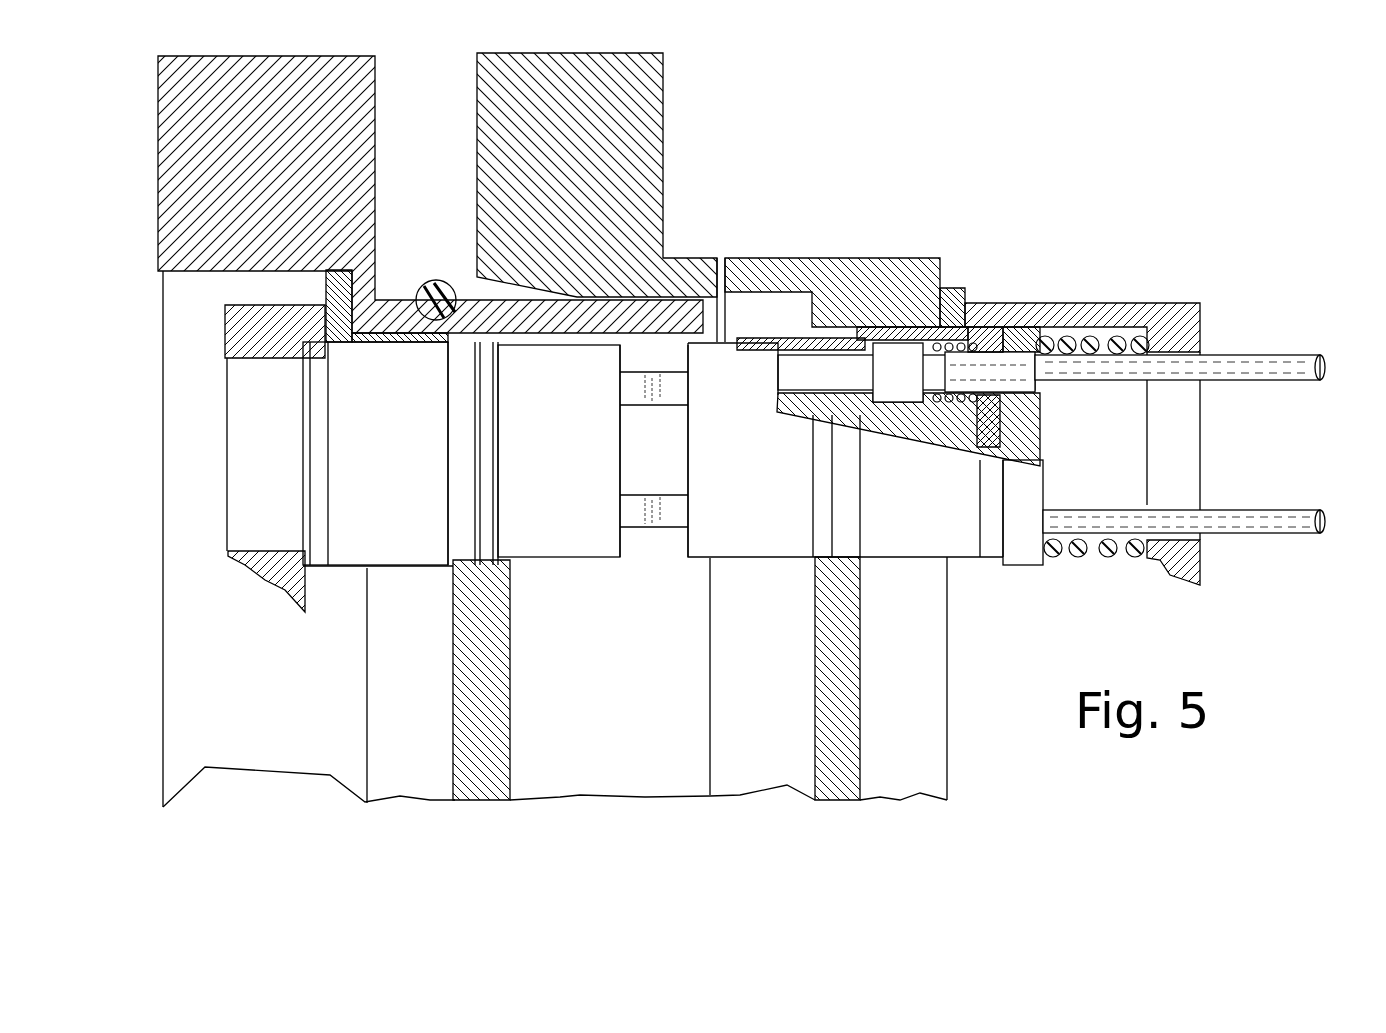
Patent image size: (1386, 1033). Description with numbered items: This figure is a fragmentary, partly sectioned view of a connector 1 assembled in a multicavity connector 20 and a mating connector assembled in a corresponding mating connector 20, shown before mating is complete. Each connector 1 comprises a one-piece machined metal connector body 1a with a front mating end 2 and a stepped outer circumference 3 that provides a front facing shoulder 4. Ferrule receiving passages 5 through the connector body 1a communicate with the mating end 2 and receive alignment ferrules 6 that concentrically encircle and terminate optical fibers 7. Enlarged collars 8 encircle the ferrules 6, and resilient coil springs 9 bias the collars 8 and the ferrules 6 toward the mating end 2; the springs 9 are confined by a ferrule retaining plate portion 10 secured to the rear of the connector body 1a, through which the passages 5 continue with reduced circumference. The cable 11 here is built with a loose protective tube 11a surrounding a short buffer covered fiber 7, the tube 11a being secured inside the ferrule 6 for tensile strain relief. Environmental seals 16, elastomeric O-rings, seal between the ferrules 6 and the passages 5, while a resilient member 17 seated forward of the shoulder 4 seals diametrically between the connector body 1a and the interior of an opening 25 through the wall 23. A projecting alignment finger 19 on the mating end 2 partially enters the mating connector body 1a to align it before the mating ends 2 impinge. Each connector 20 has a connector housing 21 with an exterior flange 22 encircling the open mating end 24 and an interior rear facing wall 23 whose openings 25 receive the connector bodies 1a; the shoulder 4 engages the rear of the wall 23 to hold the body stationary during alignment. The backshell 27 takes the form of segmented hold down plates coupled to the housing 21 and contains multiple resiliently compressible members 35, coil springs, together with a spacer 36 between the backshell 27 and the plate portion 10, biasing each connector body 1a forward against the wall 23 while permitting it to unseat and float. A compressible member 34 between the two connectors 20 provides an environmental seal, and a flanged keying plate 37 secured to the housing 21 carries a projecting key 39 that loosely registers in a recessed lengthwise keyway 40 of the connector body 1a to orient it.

The connector 1 is at (385, 162).
The connector body 1a is at (778, 300).
The front mating end 2 is at (672, 292).
The outer circumference 3 is at (838, 300).
The front facing shoulder 4 is at (880, 325).
The ferrule receiving passage 5 is at (810, 338).
The alignment ferrule 6 is at (782, 440).
The optical fiber 7 is at (1322, 364).
The enlarged collar 8 is at (918, 350).
The resilient spring 9 is at (990, 340).
The ferrule retaining plate portion 10 is at (1025, 435).
The cable 11 is at (1250, 354).
The protective tube 11a is at (1242, 378).
The environmental seal 16 is at (935, 400).
The resilient member 17 is at (862, 300).
The alignment finger 19 is at (673, 390).
The connector 20 is at (382, 296).
The connector housing 21 is at (735, 270).
The exterior flange 22 is at (718, 290).
The wall 23 is at (862, 620).
The open mating end 24 is at (490, 278).
The opening 25 is at (858, 505).
The backshell 27 is at (1135, 303).
The compressible member 34 is at (440, 285).
The resiliently compressible member 35 is at (1065, 336).
The spacer 36 is at (1020, 566).
The flanged keying plate 37 is at (325, 285).
The projecting key 39 is at (830, 425).
The recessed lengthwise keyway 40 is at (1022, 330).